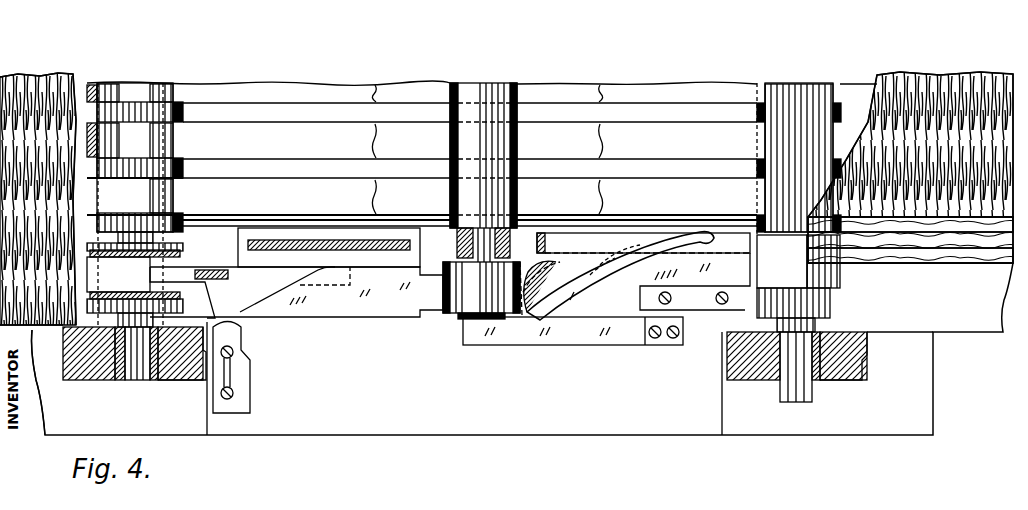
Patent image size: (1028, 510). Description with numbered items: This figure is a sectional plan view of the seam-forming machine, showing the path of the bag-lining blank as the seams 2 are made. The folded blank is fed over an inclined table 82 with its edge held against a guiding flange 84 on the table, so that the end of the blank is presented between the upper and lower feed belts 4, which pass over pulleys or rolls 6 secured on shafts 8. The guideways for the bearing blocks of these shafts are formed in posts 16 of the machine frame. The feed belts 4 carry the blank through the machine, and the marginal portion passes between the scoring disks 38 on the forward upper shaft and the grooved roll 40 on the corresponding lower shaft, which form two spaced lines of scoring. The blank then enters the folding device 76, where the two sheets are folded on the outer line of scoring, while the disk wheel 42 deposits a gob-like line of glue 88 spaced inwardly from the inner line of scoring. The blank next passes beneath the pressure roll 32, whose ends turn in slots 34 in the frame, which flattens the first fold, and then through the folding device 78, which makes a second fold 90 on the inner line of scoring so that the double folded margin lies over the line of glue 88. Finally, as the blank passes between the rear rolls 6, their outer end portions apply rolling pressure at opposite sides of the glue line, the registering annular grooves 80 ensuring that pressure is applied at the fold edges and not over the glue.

The seams 2 is at (971, 270).
The feed belts 4 is at (86, 140).
The pulleys or rolls 6 is at (128, 117).
The shafts 8 is at (138, 380).
The posts 16 is at (97, 380).
The pressure roll 32 is at (477, 88).
The slots 34 is at (456, 246).
The scoring disks 38 is at (183, 254).
The roll 40 is at (183, 247).
The disk wheel 42 is at (335, 239).
The folding device 76 is at (371, 313).
The folding device 78 is at (634, 288).
The annular grooves 80 is at (780, 244).
The inclined table 82 is at (79, 90).
The guiding flange 84 is at (37, 388).
The line of glue 88 is at (931, 264).
The second fold 90 is at (990, 264).